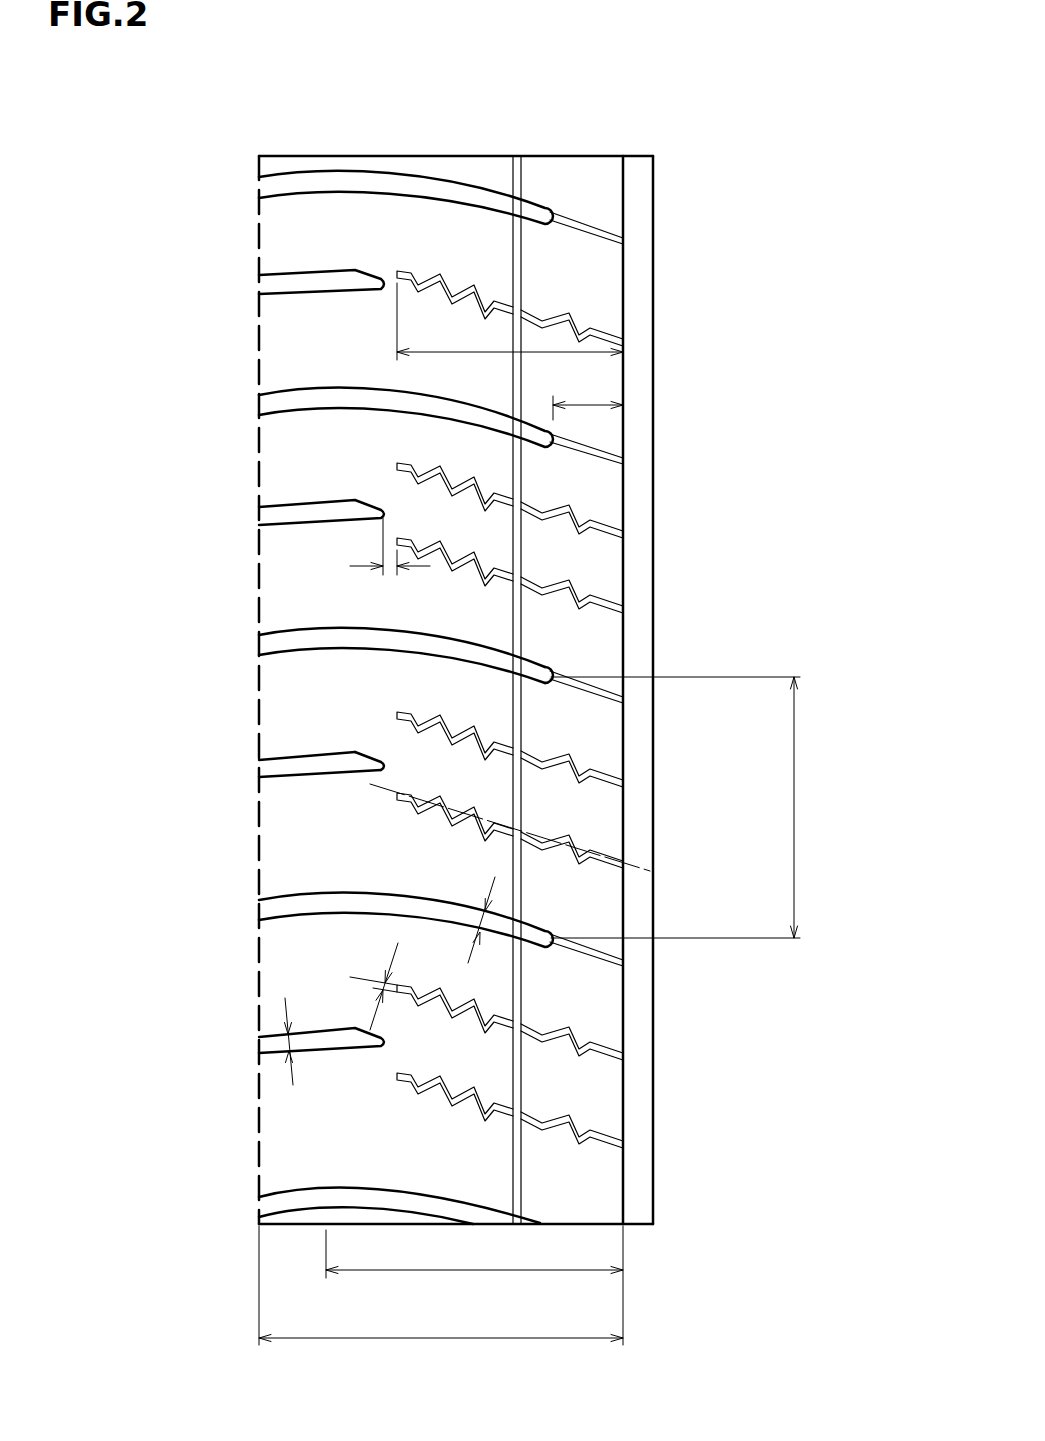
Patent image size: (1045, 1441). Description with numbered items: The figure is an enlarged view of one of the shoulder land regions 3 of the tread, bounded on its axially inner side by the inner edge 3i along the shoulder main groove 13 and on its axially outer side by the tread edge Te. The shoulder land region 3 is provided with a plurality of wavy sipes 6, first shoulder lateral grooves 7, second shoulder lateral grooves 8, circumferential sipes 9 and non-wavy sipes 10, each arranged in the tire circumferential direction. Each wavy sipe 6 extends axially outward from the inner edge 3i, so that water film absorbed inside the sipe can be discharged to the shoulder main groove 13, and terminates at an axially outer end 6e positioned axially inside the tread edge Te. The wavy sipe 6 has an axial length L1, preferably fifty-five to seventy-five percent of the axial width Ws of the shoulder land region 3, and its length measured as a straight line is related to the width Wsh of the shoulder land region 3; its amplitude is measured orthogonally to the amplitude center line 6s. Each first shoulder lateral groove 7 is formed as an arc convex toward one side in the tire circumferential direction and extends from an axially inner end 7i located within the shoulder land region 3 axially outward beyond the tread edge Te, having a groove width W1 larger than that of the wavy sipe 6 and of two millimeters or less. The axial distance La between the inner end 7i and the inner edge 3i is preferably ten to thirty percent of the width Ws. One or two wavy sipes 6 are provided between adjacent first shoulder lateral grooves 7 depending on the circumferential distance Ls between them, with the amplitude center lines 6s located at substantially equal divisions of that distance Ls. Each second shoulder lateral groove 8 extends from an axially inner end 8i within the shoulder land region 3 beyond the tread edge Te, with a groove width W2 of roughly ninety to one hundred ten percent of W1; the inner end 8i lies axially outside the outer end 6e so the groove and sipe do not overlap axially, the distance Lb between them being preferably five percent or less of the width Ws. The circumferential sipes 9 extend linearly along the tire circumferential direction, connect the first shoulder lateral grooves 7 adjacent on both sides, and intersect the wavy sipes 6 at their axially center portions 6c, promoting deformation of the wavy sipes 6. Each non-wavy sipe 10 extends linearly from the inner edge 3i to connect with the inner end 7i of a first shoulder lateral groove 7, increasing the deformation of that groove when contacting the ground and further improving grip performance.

The shoulder land region 3 is at (463, 676).
The axially inner edge of shoulder land region 3i is at (625, 268).
The shoulder main groove 13 is at (636, 1192).
The tread edge Te is at (259, 166).
The circumferential sipe 9 is at (517, 250).
The first shoulder lateral groove 7 is at (455, 697).
The axially inner end of first shoulder lateral groove 7i is at (552, 676).
The second shoulder lateral groove 8 is at (283, 661).
The axially inner end of second shoulder lateral groove 8i is at (383, 769).
The non-wavy sipe 10 is at (598, 228).
The wavy sipe 6 is at (444, 616).
The axially center portion of wavy sipe 6c is at (497, 277).
The axially outer end of wavy sipe 6e is at (397, 465).
The amplitude center line of wavy sipe 6s is at (387, 790).
The axial length of wavy sipe L1 is at (460, 353).
The axial distance between inner end of first shoulder lateral groove and inner edge La is at (600, 393).
The axial distance between inner end of second shoulder lateral groove and outer end Lb is at (385, 570).
The circumferential distance between first shoulder lateral grooves Ls is at (692, 807).
The groove width of first shoulder lateral groove W1 is at (485, 913).
The groove width of second shoulder lateral groove W2 is at (288, 1040).
The axial width of shoulder land region Wsh is at (474, 1285).
The axial width of shoulder land region Ws is at (441, 1299).